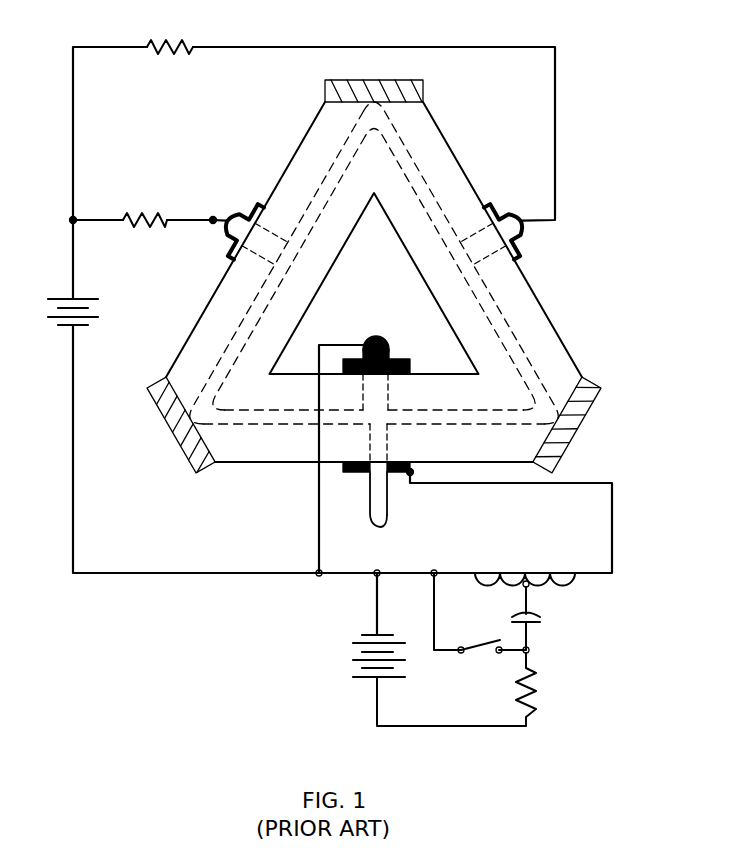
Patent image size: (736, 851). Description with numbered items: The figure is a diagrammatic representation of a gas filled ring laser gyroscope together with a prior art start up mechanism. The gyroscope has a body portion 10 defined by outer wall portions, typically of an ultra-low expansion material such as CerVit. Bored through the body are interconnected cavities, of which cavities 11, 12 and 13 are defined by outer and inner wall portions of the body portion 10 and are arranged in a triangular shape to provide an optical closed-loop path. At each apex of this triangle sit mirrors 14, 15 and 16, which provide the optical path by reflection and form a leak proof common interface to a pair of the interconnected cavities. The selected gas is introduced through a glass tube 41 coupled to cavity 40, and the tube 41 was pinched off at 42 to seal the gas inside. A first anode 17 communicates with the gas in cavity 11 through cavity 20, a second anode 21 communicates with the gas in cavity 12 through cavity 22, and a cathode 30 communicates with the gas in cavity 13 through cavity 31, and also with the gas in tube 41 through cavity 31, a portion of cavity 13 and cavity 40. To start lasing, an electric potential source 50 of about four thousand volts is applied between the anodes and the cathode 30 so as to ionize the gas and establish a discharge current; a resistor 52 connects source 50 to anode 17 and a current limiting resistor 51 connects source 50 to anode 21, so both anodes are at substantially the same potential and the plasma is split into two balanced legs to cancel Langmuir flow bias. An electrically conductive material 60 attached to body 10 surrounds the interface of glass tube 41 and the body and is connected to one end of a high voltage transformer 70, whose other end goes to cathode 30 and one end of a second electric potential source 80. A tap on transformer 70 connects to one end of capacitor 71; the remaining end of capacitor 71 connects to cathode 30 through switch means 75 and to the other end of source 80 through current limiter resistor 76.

The body portion 10 is at (451, 146).
The cavity 11 is at (345, 157).
The cavity 12 is at (418, 178).
The cavity 13 is at (313, 405).
The mirror 14 is at (425, 90).
The mirror 15 is at (588, 414).
The mirror 16 is at (165, 420).
The first anode 17 is at (232, 212).
The cavity 20 is at (270, 248).
The second anode 21 is at (531, 242).
The cavity 22 is at (489, 258).
The cathode 30 is at (376, 335).
The cavity 31 is at (384, 389).
The cavity 40 is at (383, 440).
The glass tube 41 is at (392, 491).
The pinch-off 42 is at (386, 525).
The electric potential source 50 is at (68, 297).
The current limiting resistor 51 is at (165, 45).
The resistor 52 is at (151, 212).
The electrically conductive material 60 is at (362, 474).
The high voltage transformer 70 is at (521, 578).
The capacitor 71 is at (541, 612).
The switch means 75 is at (489, 639).
The current limiter resistor 76 is at (534, 688).
The second electric potential source 80 is at (369, 680).